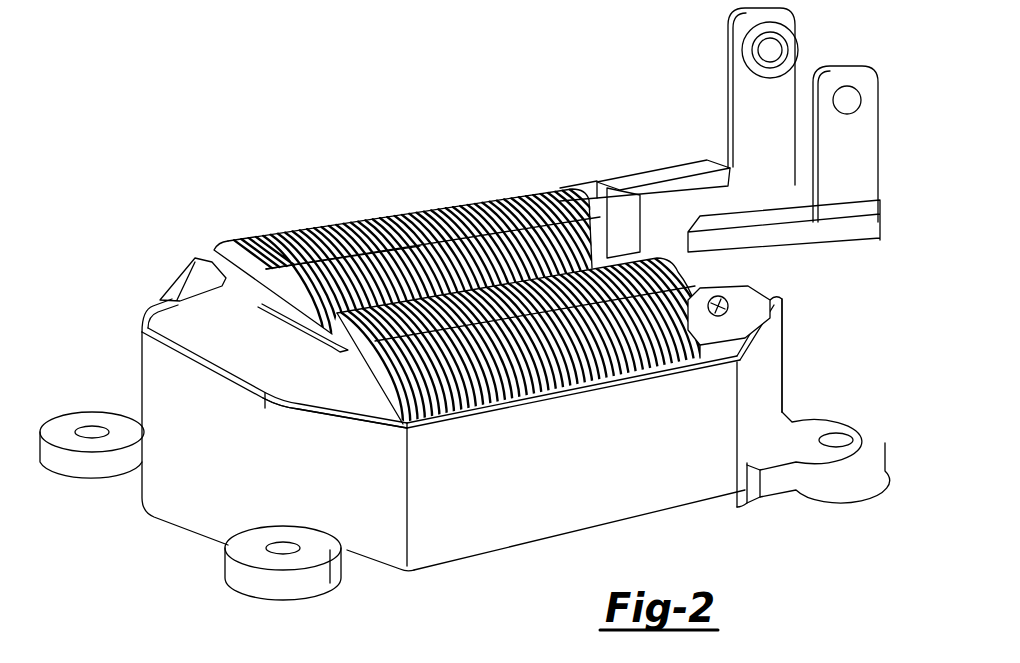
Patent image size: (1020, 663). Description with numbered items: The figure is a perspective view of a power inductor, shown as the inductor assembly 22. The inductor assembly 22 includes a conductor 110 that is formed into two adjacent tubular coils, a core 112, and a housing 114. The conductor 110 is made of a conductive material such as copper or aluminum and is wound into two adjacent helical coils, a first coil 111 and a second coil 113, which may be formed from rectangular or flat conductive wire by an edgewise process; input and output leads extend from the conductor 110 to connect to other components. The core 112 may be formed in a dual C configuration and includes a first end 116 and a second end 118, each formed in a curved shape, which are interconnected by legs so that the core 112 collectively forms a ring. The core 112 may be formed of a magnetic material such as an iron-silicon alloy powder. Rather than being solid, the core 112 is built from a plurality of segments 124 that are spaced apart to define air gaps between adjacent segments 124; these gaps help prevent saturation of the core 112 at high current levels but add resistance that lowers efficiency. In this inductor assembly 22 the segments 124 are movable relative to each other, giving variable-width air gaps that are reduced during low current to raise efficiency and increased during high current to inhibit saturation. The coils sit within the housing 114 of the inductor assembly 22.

The inductor assembly 22 is at (185, 566).
The conductor 110 is at (471, 195).
The first coil 111 is at (315, 252).
The core 112 is at (257, 345).
The second coil 113 is at (530, 358).
The housing 114 is at (772, 380).
The first end 116 is at (178, 313).
The second end 118 is at (622, 247).
The segments 124 is at (320, 372).